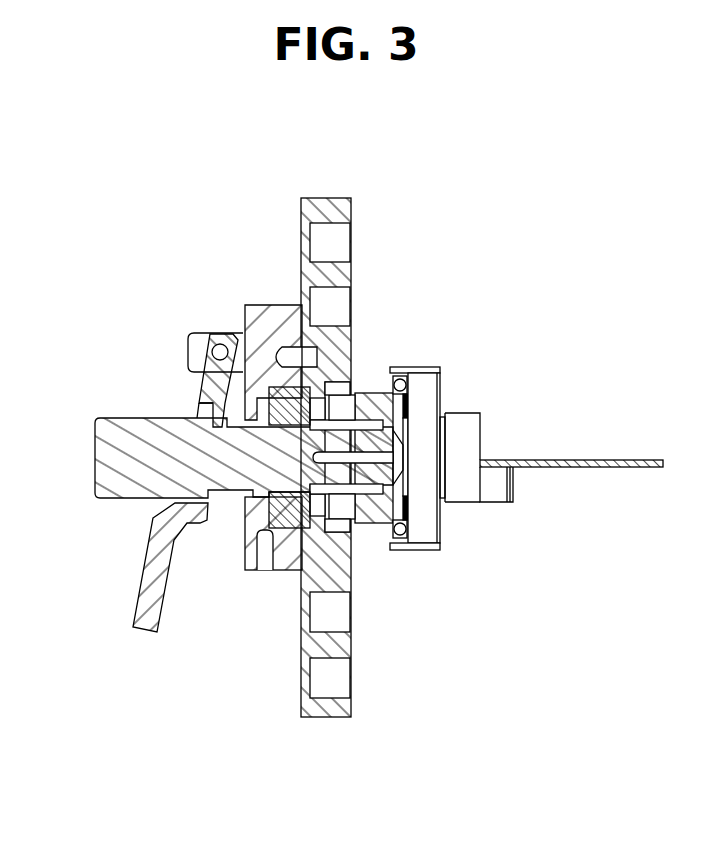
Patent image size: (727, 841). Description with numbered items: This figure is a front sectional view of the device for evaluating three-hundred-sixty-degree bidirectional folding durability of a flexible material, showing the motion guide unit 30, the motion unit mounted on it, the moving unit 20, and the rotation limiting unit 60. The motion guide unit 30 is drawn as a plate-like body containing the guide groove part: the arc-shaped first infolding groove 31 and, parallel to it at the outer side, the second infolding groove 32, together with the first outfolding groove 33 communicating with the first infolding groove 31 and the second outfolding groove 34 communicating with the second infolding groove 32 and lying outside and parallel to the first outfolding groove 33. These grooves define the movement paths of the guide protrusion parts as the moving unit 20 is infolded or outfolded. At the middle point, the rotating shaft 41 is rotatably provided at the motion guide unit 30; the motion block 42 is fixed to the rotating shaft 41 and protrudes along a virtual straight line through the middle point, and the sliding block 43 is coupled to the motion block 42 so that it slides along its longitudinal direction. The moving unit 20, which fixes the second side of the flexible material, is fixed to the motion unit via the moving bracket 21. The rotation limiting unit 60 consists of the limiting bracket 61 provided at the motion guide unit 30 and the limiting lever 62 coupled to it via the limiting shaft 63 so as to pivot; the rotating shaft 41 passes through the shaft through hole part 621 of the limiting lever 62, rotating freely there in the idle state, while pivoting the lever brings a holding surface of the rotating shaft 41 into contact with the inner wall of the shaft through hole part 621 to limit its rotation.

The moving unit 20 is at (575, 452).
The moving bracket 21 is at (464, 412).
The motion guide unit 30 is at (358, 207).
The first infolding groove 31 is at (338, 301).
The second infolding groove 32 is at (338, 247).
The first outfolding groove 33 is at (332, 630).
The second outfolding groove 34 is at (332, 696).
The rotating shaft 41 is at (100, 458).
The motion block 42 is at (366, 398).
The sliding block 43 is at (428, 366).
The rotation limiting unit 60 is at (169, 307).
The limiting bracket 61 is at (218, 333).
The limiting lever 62 is at (155, 333).
The limiting shaft 63 is at (192, 333).
The shaft through hole part 621 is at (205, 411).